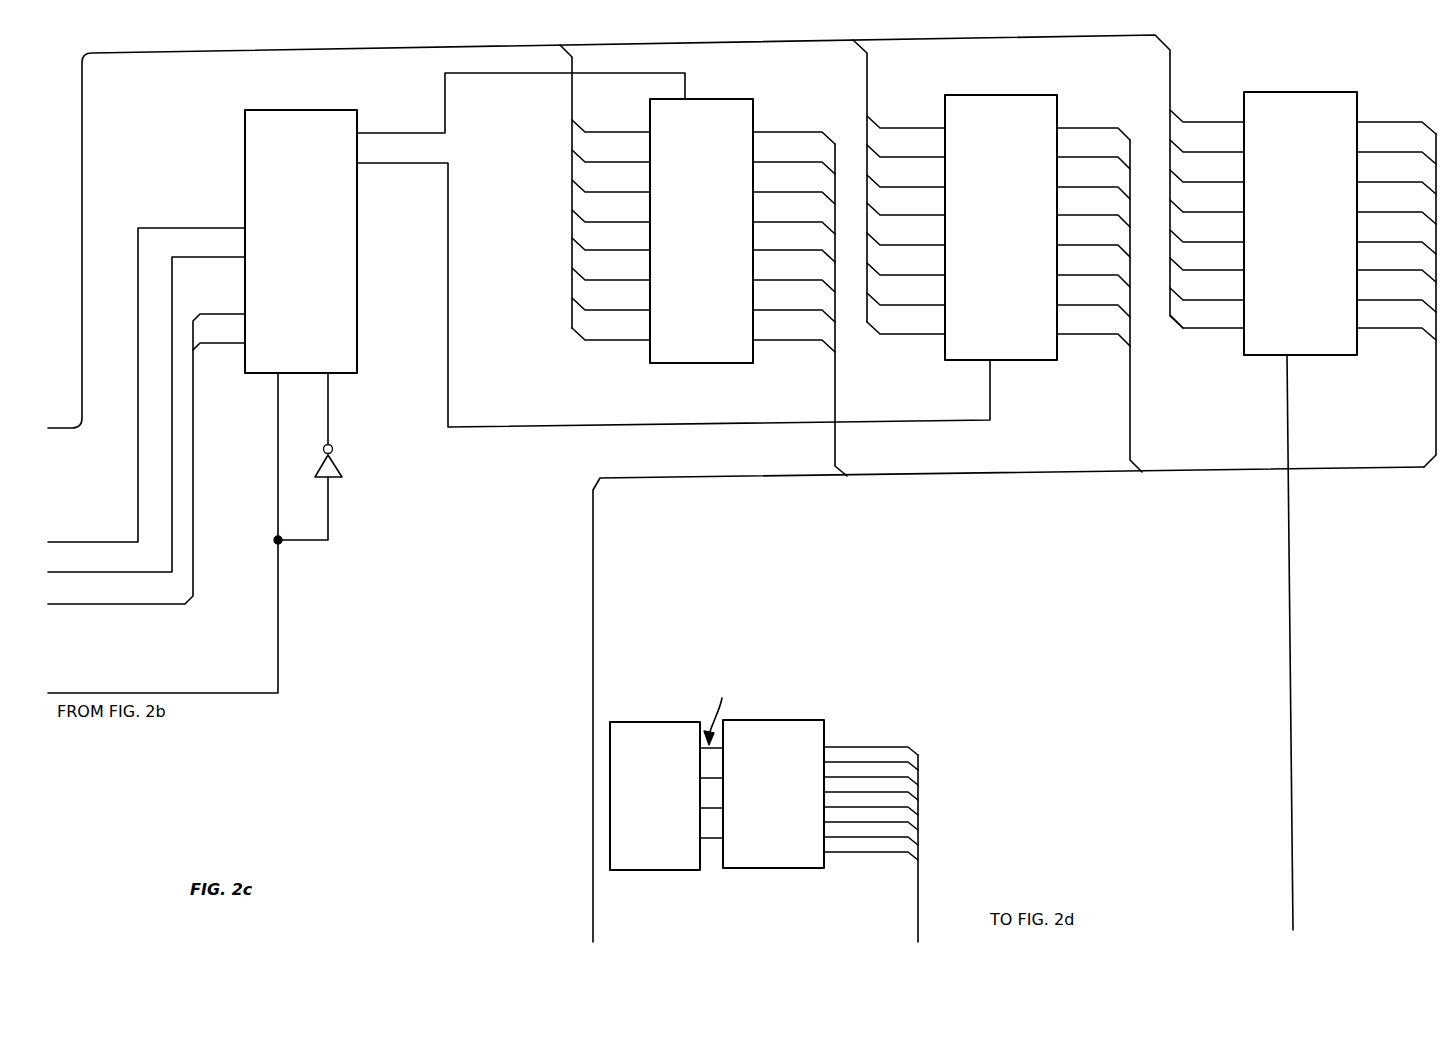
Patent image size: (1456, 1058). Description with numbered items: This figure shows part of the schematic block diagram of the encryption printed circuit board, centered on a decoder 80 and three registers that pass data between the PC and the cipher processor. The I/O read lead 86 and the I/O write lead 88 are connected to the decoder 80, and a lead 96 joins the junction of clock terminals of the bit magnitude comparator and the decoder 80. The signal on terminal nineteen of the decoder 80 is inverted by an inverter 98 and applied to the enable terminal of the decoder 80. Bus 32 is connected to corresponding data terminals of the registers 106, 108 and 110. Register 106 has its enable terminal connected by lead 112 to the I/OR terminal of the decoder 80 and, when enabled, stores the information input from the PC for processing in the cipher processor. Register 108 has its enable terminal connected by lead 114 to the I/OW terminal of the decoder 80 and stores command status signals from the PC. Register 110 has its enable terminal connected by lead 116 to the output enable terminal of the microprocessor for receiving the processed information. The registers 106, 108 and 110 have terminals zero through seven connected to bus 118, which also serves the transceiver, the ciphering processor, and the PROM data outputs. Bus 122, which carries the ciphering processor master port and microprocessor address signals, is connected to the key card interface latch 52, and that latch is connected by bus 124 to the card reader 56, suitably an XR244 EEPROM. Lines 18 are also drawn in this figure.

The address lines 18 is at (92, 585).
The bus 32 is at (67, 403).
The key card interface latch 52 is at (806, 720).
The card reader 56 is at (638, 720).
The decoder 80 is at (358, 227).
The I/O read lead 86 is at (88, 523).
The I/O write lead 88 is at (92, 553).
The lead 96 is at (88, 672).
The inverter 98 is at (343, 468).
The register 106 is at (724, 99).
The register 108 is at (1045, 95).
The register 110 is at (1337, 92).
The lead 112 is at (447, 92).
The lead 114 is at (660, 423).
The lead 116 is at (1292, 921).
The bus 118 is at (963, 478).
The bus 122 is at (918, 918).
The bus 124 is at (731, 713).